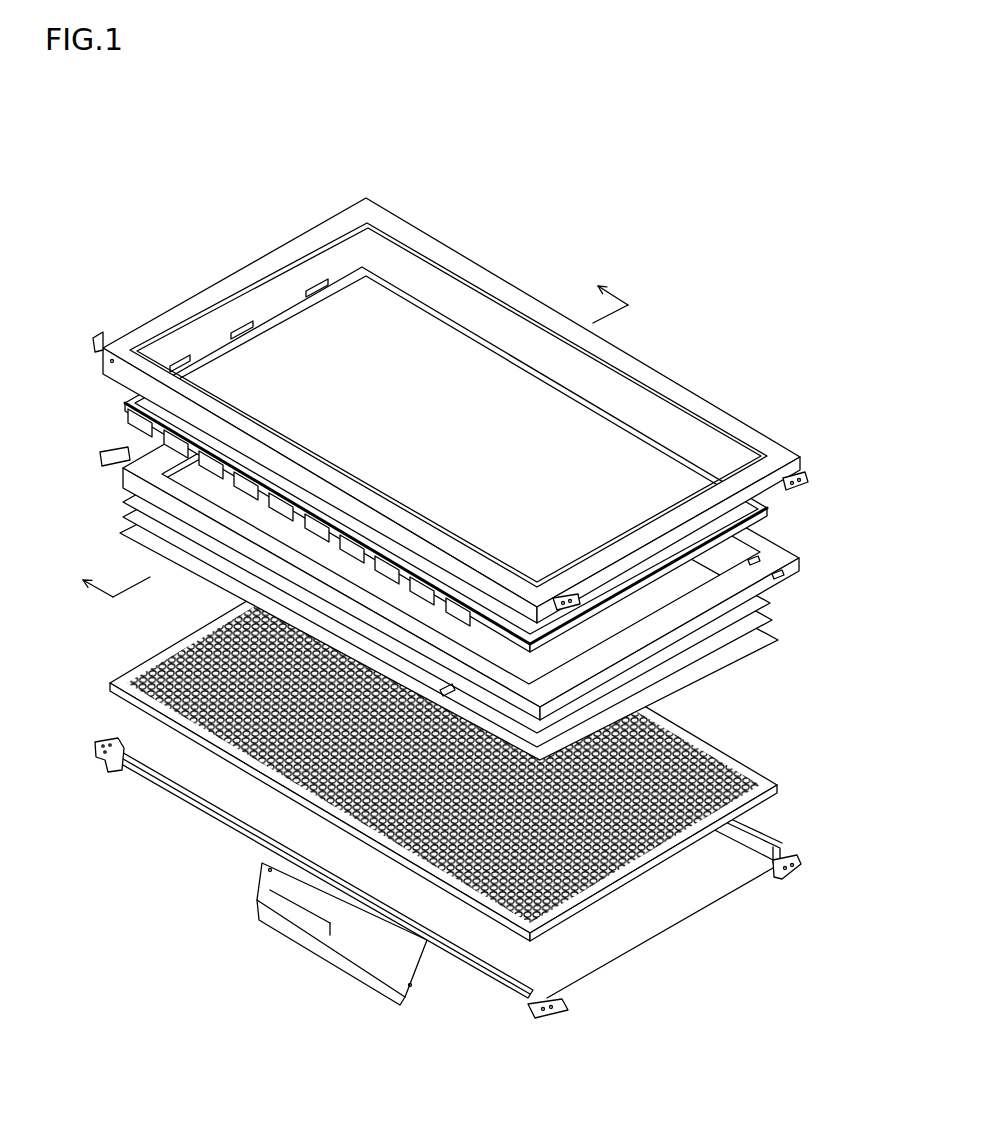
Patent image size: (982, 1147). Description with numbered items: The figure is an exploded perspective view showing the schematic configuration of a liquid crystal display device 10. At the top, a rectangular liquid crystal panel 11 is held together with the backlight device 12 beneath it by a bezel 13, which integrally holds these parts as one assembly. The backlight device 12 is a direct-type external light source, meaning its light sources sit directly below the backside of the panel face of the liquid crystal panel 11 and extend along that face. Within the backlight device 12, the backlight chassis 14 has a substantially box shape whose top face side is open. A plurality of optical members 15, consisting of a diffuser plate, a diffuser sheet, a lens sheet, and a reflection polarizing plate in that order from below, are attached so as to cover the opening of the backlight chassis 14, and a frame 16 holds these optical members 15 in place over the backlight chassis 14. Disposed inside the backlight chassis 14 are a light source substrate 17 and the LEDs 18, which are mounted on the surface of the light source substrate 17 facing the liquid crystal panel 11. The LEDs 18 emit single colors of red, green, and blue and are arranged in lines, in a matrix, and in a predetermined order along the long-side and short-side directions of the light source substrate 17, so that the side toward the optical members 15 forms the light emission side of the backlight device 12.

The liquid crystal display device 10 is at (590, 258).
The liquid crystal panel 11 is at (278, 316).
The backlight device 12 is at (812, 879).
The bezel 13 is at (641, 362).
The backlight chassis 14 is at (168, 792).
The optical members 15 is at (786, 600).
The frame 16 is at (775, 553).
The light source substrate 17 is at (489, 781).
The LEDs 18 is at (262, 767).